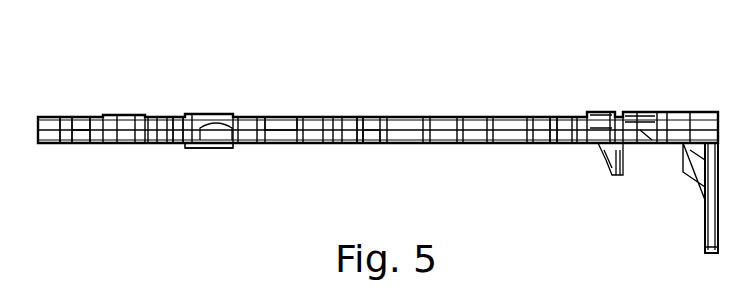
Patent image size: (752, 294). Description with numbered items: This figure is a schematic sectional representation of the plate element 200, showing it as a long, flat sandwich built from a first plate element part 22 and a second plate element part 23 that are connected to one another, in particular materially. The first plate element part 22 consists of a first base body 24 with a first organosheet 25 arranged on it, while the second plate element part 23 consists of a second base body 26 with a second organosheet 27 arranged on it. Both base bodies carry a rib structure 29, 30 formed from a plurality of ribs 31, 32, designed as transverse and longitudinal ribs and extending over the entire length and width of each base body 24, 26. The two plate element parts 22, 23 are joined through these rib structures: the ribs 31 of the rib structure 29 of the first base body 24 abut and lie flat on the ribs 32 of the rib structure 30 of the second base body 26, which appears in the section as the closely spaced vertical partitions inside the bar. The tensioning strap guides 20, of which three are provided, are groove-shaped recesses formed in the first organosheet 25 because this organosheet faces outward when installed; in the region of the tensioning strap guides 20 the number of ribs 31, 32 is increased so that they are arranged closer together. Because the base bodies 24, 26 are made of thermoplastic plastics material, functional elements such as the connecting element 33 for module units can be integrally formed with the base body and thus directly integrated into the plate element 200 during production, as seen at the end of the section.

The plate element 200 is at (627, 80).
The tensioning strap guide 20 is at (182, 118).
The first plate element part 22 is at (58, 112).
The second plate element part 23 is at (66, 152).
The first base body 24 is at (225, 118).
The first organosheet 25 is at (297, 118).
The second base body 26 is at (230, 147).
The second organosheet 27 is at (373, 142).
The rib structure 29 is at (78, 120).
The rib structure 30 is at (85, 145).
The ribs 31 is at (107, 82).
The ribs 32 is at (112, 170).
The connecting element 33 is at (700, 212).